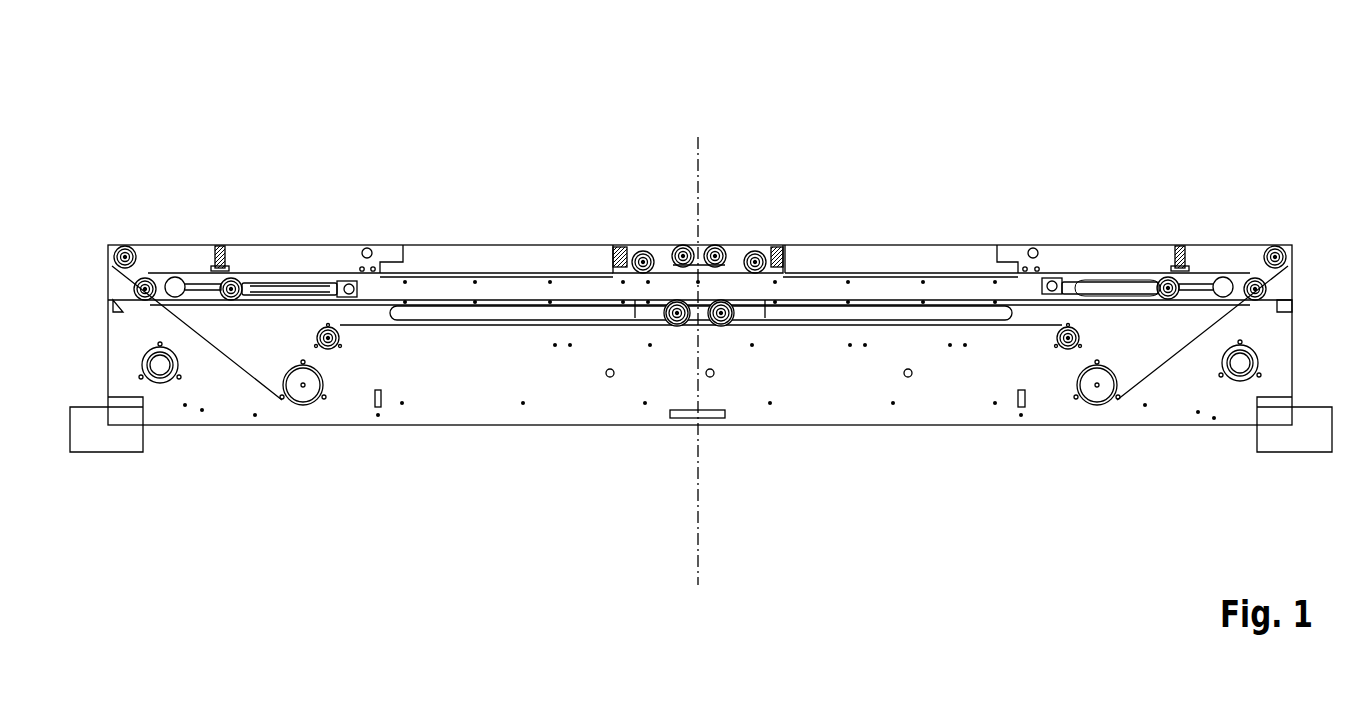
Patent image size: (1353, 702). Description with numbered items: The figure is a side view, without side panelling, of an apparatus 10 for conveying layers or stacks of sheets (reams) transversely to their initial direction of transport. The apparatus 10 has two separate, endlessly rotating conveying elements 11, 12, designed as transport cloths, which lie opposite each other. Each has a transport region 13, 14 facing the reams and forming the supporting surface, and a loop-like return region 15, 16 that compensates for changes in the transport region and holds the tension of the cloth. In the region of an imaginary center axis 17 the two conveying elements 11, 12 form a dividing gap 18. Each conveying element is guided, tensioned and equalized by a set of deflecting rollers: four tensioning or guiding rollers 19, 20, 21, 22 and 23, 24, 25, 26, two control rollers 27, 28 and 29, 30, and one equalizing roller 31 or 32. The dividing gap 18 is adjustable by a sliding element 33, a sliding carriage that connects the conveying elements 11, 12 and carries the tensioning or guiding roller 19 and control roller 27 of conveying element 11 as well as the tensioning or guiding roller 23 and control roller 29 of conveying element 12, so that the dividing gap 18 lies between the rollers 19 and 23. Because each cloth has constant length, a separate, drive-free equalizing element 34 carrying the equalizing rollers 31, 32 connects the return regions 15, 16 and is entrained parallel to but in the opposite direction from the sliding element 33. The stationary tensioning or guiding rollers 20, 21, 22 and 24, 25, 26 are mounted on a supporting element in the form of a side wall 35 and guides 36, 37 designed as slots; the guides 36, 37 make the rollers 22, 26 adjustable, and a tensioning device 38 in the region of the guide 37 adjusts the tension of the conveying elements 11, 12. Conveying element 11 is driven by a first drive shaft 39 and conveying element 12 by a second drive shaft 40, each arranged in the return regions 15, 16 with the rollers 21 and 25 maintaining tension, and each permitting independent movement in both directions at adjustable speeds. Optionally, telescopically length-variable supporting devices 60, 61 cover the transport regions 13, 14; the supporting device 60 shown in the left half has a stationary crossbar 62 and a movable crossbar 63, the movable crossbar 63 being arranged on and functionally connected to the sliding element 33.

The apparatus 10 is at (590, 124).
The conveying element 11 is at (972, 194).
The conveying element 12 is at (363, 199).
The transport region 13 is at (911, 243).
The transport region 14 is at (440, 243).
The return region 15 is at (1013, 327).
The return region 16 is at (420, 327).
The center axis 17 is at (697, 553).
The dividing gap 18 is at (704, 234).
The tensioning or guiding roller 19 is at (725, 243).
The tensioning or guiding roller 20 is at (1275, 245).
The tensioning or guiding roller 21 is at (1064, 350).
The tensioning or guiding roller 22 is at (1145, 243).
The tensioning or guiding roller 23 is at (679, 245).
The tensioning or guiding roller 24 is at (118, 243).
The tensioning or guiding roller 25 is at (336, 350).
The tensioning or guiding roller 26 is at (257, 243).
The control roller 27 is at (765, 247).
The control roller 28 is at (1252, 278).
The control roller 29 is at (635, 250).
The control roller 30 is at (158, 243).
The equalizing roller 31 is at (722, 325).
The equalizing roller 32 is at (677, 325).
The sliding element 33 is at (740, 287).
The equalizing element 34 is at (640, 315).
The side wall 35 is at (463, 400).
The guide 36 is at (1198, 284).
The guide 37 is at (182, 243).
The tensioning device 38 is at (318, 243).
The first drive shaft 39 is at (1097, 397).
The second drive shaft 40 is at (302, 397).
The supporting device 60 is at (566, 262).
The supporting device 61 is at (806, 262).
The stationary crossbar 62 is at (218, 243).
The movable crossbar 63 is at (613, 262).